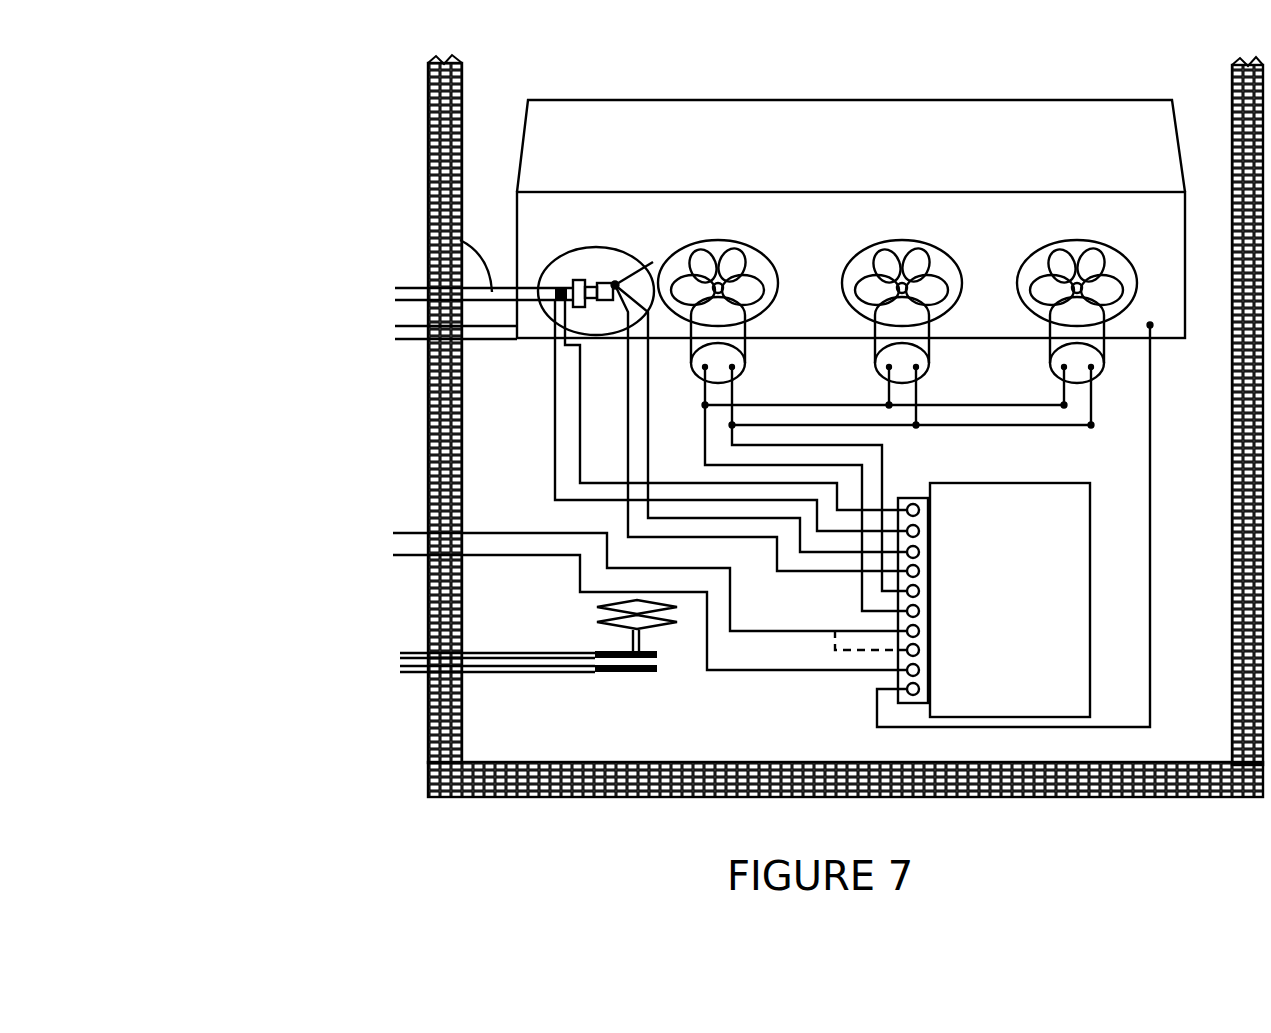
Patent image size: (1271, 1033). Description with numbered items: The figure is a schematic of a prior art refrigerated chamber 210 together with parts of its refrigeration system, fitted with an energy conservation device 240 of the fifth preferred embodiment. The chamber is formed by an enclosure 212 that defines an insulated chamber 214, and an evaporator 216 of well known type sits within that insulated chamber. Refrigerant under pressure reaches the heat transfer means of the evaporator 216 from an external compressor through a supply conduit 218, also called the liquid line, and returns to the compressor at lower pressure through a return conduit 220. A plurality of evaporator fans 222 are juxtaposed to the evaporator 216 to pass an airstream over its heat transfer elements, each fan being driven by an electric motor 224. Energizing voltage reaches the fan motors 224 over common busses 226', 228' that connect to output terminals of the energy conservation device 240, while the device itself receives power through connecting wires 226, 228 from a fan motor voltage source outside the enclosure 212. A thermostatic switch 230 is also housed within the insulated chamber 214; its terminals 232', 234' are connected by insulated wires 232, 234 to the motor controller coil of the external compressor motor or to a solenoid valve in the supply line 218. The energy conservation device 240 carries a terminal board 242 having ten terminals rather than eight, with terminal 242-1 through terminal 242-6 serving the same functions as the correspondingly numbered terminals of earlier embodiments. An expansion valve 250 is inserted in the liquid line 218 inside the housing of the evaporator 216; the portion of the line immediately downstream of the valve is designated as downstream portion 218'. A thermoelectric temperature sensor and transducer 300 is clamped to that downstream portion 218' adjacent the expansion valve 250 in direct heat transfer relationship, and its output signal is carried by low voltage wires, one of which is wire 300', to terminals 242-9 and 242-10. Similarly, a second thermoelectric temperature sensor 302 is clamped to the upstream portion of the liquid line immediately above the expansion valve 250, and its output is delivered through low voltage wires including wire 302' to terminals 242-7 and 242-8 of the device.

The refrigerated chamber 210 is at (334, 409).
The enclosure 212 is at (842, 797).
The insulated chamber 214 is at (1203, 673).
The evaporator 216 is at (851, 186).
The supply conduit 218 is at (389, 272).
The downstream portion of liquid line 218' is at (419, 251).
The return conduit 220 is at (410, 340).
The evaporator fan 222 is at (725, 258).
The electric motor 224 is at (748, 365).
The connecting wire 226 is at (535, 563).
The connecting wire 228 is at (519, 608).
The common bus 226' is at (967, 489).
The common bus 228' is at (980, 479).
The thermostatic switch 230 is at (470, 677).
The insulated wire 232 is at (497, 633).
The switch terminal 232' is at (562, 619).
The insulated wire 234 is at (497, 687).
The switch terminal 234' is at (562, 700).
The energy conservation device 240 is at (1030, 667).
The terminal board 242 is at (905, 500).
The terminal 242-1 is at (920, 689).
The terminal 242-6 is at (920, 591).
The terminal 242-7 is at (920, 571).
The terminal 242-8 is at (920, 552).
The terminal 242-9 is at (920, 531).
The terminal 242-10 is at (920, 510).
The expansion valve 250 is at (592, 283).
The thermoelectric temperature sensor and transducer 300 is at (573, 263).
The low voltage wire 300' is at (689, 415).
The second thermoelectric temperature detector and transducer 302 is at (651, 254).
The low voltage wire 302' is at (691, 428).